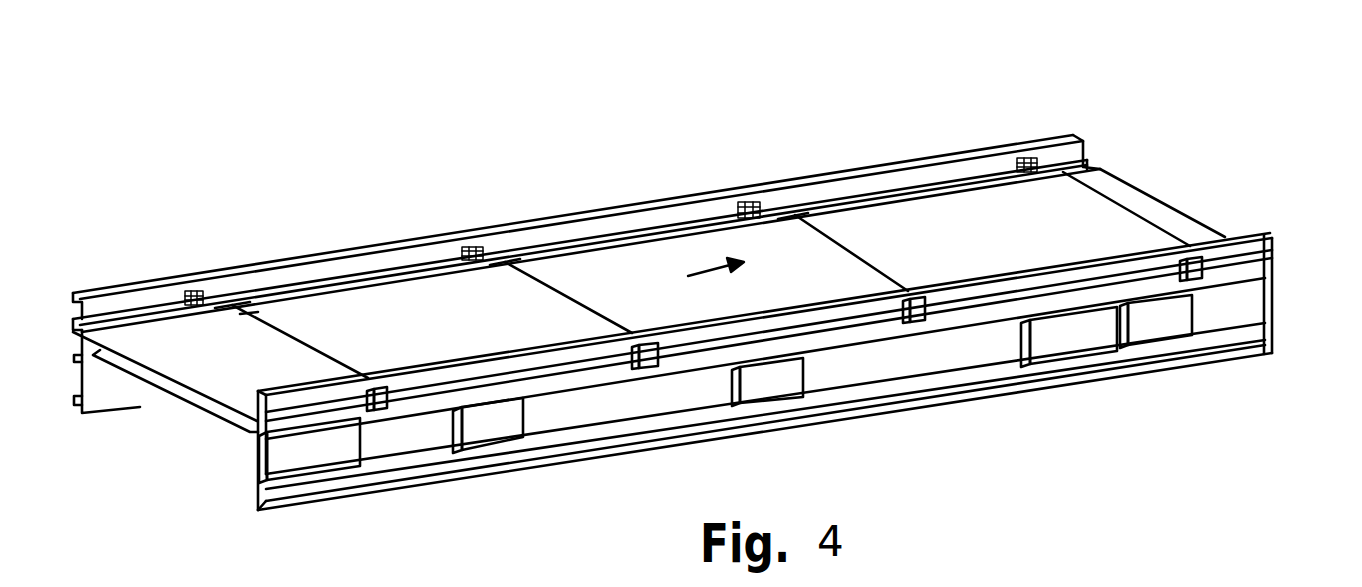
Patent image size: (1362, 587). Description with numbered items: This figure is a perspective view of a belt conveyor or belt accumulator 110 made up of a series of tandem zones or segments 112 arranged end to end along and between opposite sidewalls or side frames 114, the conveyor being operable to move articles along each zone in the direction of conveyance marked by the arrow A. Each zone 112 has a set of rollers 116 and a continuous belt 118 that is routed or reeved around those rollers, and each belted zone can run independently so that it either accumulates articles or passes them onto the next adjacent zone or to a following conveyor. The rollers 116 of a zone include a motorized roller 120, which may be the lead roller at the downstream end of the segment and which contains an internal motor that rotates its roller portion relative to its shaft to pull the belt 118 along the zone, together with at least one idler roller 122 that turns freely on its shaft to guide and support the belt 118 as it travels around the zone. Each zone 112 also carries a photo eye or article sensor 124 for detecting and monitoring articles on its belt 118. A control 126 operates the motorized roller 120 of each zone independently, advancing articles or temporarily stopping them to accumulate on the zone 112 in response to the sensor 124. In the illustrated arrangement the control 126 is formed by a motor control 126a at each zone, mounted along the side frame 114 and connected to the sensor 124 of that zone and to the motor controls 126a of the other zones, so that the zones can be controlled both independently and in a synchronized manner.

The belt conveyor 110 is at (528, 116).
The zone 112 is at (334, 194).
The side frame 114 is at (1096, 143).
The roller 116 is at (601, 234).
The belt 118 is at (182, 367).
The motorized roller 120 is at (492, 262).
The idler roller 122 is at (252, 418).
The article sensor 124 is at (1195, 258).
The control 126 is at (253, 492).
The motor control 126a is at (1157, 331).